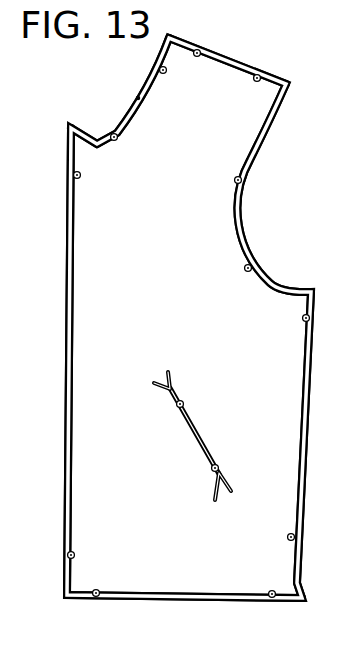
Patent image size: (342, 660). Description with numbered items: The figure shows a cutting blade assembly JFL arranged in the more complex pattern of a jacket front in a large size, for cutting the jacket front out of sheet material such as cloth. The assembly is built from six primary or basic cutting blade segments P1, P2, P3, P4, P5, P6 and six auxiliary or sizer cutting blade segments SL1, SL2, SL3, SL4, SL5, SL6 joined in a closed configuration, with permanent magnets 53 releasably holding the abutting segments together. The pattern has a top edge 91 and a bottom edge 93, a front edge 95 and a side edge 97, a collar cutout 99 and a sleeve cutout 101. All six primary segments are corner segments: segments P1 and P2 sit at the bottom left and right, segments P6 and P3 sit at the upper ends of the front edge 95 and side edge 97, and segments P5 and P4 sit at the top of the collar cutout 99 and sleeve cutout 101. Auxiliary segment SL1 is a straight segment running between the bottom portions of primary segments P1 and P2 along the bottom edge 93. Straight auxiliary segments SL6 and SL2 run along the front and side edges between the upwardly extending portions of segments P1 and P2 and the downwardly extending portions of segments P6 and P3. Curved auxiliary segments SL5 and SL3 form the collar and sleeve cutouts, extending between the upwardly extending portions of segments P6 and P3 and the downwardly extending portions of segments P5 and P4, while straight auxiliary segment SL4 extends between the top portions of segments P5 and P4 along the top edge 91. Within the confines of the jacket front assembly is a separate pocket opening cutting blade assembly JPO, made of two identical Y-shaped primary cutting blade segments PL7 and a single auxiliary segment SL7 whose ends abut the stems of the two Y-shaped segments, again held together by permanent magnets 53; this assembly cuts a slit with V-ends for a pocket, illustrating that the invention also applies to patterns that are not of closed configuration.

The permanent magnets 53 is at (167, 73).
The top edge 91 is at (232, 58).
The bottom edge 93 is at (222, 603).
The front edge 95 is at (64, 428).
The side edge 97 is at (307, 410).
The collar cutout 99 is at (137, 96).
The sleeve cutout 101 is at (257, 233).
The primary cutting blade segment P1 is at (79, 601).
The primary cutting blade segment P2 is at (304, 602).
The primary cutting blade segment P3 is at (279, 291).
The primary cutting blade segment P4 is at (287, 85).
The primary cutting blade segment P5 is at (170, 38).
The primary cutting blade segment P6 is at (70, 151).
The auxiliary cutting blade segment SL1 is at (200, 593).
The auxiliary cutting blade segment SL2 is at (307, 358).
The auxiliary cutting blade segment SL3 is at (236, 243).
The auxiliary cutting blade segment SL4 is at (238, 66).
The auxiliary cutting blade segment SL5 is at (148, 98).
The auxiliary cutting blade segment SL6 is at (71, 508).
The auxiliary cutting blade segment SL7 is at (203, 428).
The primary cutting blade segment PL7 is at (178, 378).
The pocket opening cutting blade assembly JPO is at (159, 355).
The cutting blade assembly JFL is at (57, 361).